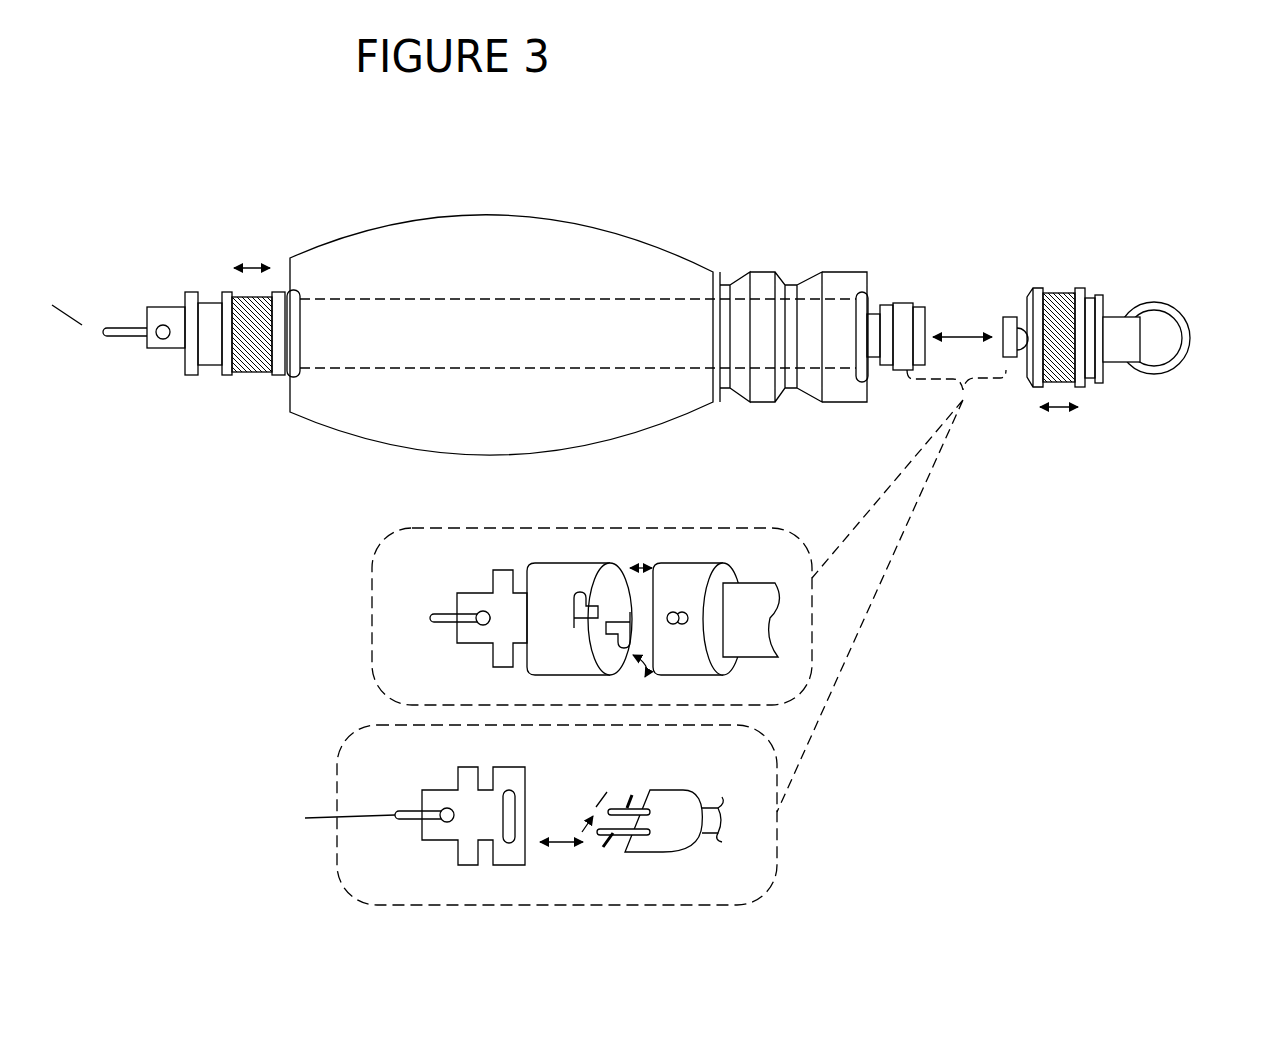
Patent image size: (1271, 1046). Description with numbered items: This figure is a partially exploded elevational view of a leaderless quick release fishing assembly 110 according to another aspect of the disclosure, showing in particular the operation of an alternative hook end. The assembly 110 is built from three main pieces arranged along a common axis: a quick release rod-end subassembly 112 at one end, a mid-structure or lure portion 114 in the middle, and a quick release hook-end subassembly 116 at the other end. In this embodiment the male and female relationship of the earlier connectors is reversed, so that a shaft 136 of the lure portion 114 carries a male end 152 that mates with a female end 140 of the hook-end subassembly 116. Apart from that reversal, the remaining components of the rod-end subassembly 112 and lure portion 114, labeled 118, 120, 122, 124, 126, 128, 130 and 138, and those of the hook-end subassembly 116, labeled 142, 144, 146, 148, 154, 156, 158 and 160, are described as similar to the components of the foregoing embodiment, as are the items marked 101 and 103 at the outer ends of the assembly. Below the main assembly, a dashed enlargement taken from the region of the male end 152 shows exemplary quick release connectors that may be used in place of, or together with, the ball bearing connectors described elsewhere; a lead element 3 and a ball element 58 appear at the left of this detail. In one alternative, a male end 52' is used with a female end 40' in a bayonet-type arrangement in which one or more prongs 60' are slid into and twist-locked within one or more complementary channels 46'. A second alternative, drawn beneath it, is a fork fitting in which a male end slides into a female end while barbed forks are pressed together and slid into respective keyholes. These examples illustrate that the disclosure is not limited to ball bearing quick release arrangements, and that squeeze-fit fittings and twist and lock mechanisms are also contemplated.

The quick release fishing assembly 110 is at (712, 118).
The quick release rod-end subassembly 112 is at (230, 220).
The lure portion 114 is at (516, 198).
The quick release hook-end subassembly 116 is at (1021, 233).
The pin 118 is at (122, 326).
The axial movement direction 120 is at (215, 268).
The pin block 122 is at (162, 350).
The pin end 124 is at (170, 318).
The threaded section 126 is at (248, 375).
The neck 128 is at (210, 367).
The sealing ring 130 is at (303, 297).
The shaft 136 is at (515, 344).
The opening 138 is at (287, 333).
The female end 140 is at (1030, 393).
The threaded section 142 is at (1057, 292).
The block 144 is at (1010, 316).
The ball 146 is at (1018, 352).
The stepped housing section 148 is at (802, 402).
The male end 152 is at (918, 305).
The shaft 154 is at (1108, 349).
The rotation direction 156 is at (1123, 305).
The ring 158 is at (1149, 384).
The neck 160 is at (883, 306).
The cable 101 is at (82, 325).
The cable 103 is at (1187, 347).
The lead wire 3 is at (430, 618).
The contact ball 58 is at (436, 613).
The female end 40' is at (579, 604).
The channels 46' is at (574, 650).
The male end 52' is at (716, 604).
The prongs 60' is at (686, 633).